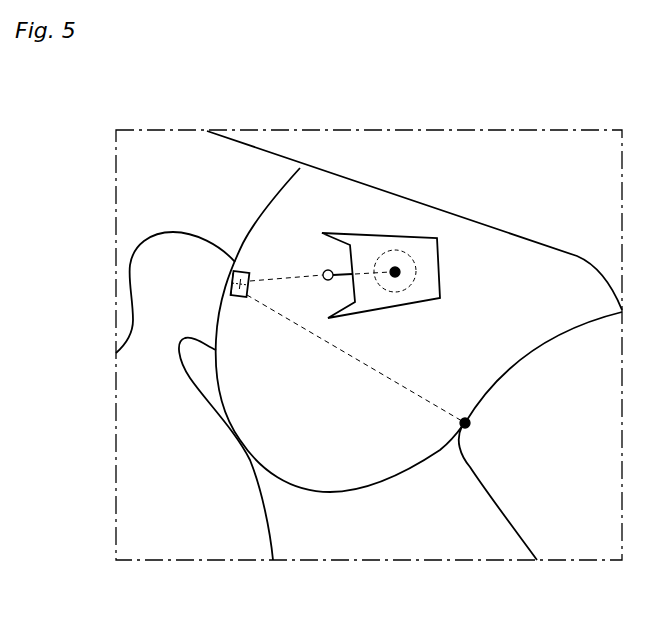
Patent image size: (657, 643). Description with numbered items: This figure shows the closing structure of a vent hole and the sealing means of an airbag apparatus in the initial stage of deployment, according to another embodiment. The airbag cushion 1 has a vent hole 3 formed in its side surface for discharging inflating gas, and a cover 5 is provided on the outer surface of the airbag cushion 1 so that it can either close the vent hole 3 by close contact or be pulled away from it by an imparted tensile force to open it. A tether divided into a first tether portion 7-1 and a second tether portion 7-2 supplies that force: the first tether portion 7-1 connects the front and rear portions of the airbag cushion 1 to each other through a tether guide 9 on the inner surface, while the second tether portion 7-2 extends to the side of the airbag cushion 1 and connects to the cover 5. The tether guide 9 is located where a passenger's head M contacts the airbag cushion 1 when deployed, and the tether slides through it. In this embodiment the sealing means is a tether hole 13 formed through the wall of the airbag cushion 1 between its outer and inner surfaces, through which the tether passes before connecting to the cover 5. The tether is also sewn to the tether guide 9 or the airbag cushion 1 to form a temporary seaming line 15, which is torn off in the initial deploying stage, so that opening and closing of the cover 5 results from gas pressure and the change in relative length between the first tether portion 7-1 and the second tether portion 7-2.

The airbag cushion 1 is at (517, 253).
The vent hole 3 is at (408, 250).
The cover 5 is at (430, 250).
The tether guide 9 is at (243, 270).
The tether hole 13 is at (328, 269).
The temporary seaming line 15 is at (231, 284).
The first tether portion 7-1 is at (331, 440).
The second tether portion 7-2 is at (285, 272).
The passenger's head M is at (153, 247).